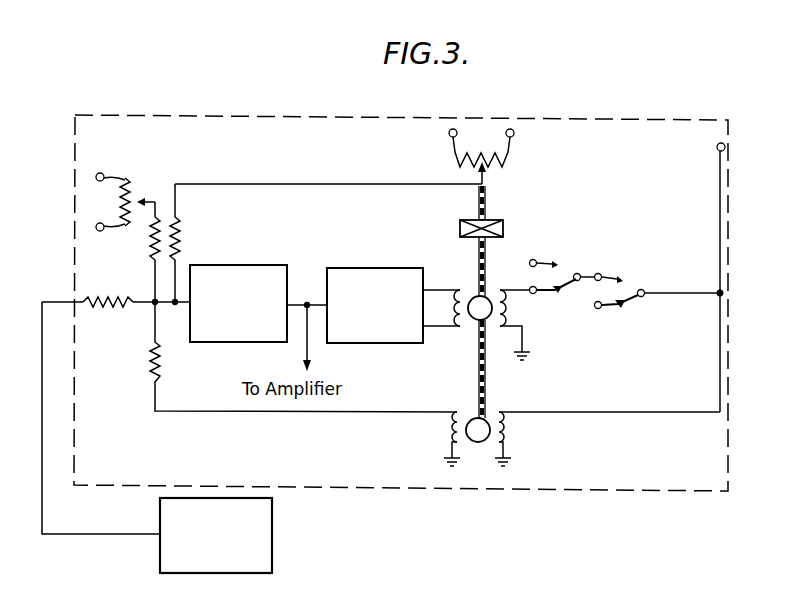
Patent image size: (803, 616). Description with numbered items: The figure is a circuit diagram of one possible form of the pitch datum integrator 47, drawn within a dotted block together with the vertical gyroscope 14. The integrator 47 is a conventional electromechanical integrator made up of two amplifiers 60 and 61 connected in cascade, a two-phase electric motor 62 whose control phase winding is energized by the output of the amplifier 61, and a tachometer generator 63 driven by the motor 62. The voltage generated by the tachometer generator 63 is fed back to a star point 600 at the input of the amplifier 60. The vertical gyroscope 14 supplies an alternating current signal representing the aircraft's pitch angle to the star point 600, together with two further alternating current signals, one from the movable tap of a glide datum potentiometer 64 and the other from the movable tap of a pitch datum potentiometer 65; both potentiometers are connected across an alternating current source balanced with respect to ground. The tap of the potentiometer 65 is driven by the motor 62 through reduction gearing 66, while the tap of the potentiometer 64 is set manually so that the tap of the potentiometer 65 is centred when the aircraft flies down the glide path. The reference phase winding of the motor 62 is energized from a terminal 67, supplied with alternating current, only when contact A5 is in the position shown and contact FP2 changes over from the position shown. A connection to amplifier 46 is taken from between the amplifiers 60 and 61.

The vertical gyroscope 14 is at (272, 540).
The amplifier 46 is at (447, 302).
The pitch datum integrator 47 is at (566, 478).
The amplifier 60 is at (224, 266).
The amplifier 61 is at (348, 268).
The two-phase electric motor 62 is at (476, 300).
The tachometer generator 63 is at (488, 418).
The glide datum potentiometer 64 is at (120, 196).
The pitch datum potentiometer 65 is at (498, 170).
The reduction gearing 66 is at (500, 222).
The terminal 67 is at (718, 150).
The star point 600 is at (150, 306).
The contact of relay A A5 is at (560, 272).
The contact of relay FP FP2 is at (628, 284).